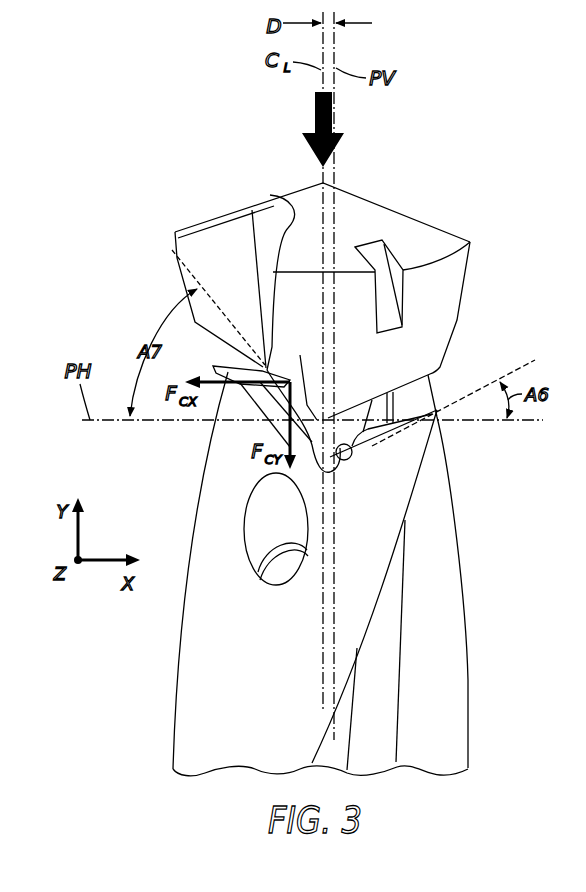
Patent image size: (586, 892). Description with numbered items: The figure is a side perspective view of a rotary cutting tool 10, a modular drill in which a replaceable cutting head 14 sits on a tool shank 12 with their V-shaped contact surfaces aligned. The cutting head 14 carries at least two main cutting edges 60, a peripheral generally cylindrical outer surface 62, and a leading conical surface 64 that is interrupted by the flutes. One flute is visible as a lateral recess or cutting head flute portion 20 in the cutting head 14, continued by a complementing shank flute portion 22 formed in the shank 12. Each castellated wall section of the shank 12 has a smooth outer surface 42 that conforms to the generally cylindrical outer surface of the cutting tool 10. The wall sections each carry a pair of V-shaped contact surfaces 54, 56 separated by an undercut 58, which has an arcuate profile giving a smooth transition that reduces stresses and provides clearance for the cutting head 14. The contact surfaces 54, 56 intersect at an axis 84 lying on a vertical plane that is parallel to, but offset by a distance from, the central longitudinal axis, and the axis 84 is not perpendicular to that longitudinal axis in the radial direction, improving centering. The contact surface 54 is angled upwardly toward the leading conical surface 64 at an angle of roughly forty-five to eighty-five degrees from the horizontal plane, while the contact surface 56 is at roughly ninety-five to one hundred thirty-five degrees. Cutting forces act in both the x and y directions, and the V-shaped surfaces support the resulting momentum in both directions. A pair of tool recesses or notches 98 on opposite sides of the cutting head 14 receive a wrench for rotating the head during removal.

The rotary cutting tool 10 is at (122, 160).
The tool shank 12 is at (502, 687).
The cutting head 14 is at (125, 227).
The cutting head flute portion 20 is at (223, 252).
The shank flute portion 22 is at (443, 703).
The outer surface 42 is at (210, 670).
The V-shaped contact surface 54 is at (412, 436).
The V-shaped contact surface 56 is at (305, 372).
The undercut 58 is at (343, 462).
The main cutting edge 60 is at (268, 200).
The peripheral outer surface 62 is at (445, 322).
The leading conical surface 64 is at (383, 227).
The axis 84 is at (353, 456).
The tool recess 98 is at (378, 258).